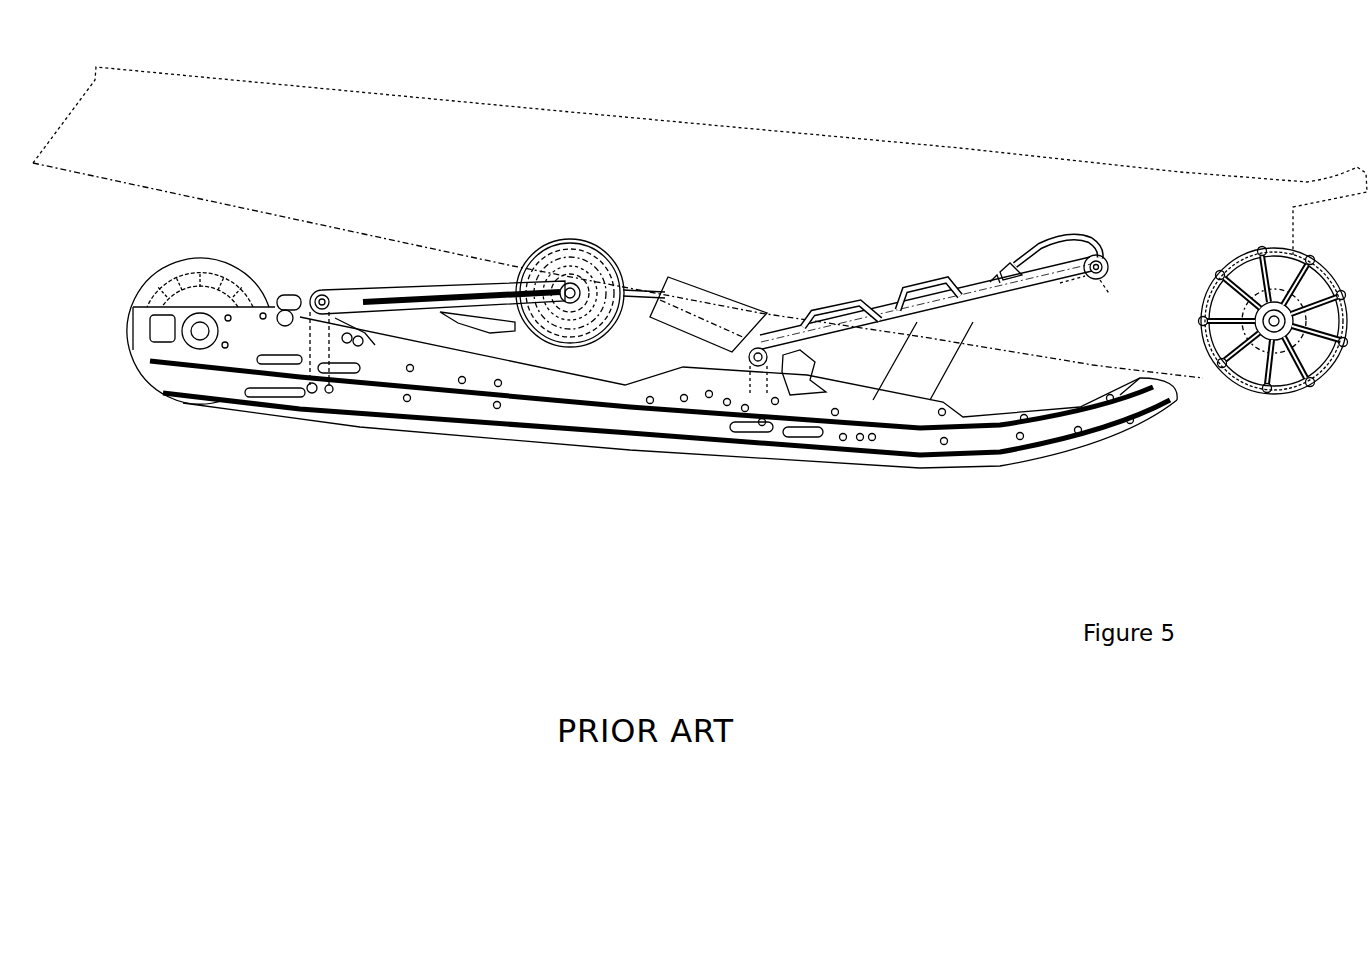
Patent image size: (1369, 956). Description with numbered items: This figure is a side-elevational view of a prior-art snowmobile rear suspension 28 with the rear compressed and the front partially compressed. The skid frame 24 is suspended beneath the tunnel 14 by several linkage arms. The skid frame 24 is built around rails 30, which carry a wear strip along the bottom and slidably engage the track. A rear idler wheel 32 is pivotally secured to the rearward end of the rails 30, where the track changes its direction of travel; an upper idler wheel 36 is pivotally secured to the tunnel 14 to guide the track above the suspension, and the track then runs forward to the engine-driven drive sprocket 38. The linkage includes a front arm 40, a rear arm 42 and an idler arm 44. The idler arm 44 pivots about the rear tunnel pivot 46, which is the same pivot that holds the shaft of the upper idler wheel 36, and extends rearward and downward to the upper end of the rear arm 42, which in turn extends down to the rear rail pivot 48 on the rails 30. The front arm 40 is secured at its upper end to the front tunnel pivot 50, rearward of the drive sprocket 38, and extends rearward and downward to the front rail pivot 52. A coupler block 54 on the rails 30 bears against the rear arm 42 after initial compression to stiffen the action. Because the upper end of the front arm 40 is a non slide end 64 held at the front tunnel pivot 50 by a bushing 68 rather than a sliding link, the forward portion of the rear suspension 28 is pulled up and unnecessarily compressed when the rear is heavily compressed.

The tunnel 14 is at (702, 123).
The skid frame 24 is at (449, 474).
The rear suspension 28 is at (771, 262).
The rails 30 is at (911, 470).
The rear idler wheel 32 is at (195, 257).
The upper idler wheel 36 is at (525, 247).
The drive sprocket 38 is at (1248, 278).
The front arm 40 is at (1030, 300).
The rear arm 42 is at (345, 328).
The idler arm 44 is at (428, 287).
The rear tunnel pivot 46 is at (578, 282).
The rear rail pivot 48 is at (318, 445).
The front tunnel pivot 50 is at (1103, 257).
The front rail pivot 52 is at (737, 355).
The coupler block 54 is at (285, 300).
The non slide end 64 is at (1075, 292).
The bushing 68 is at (1105, 280).